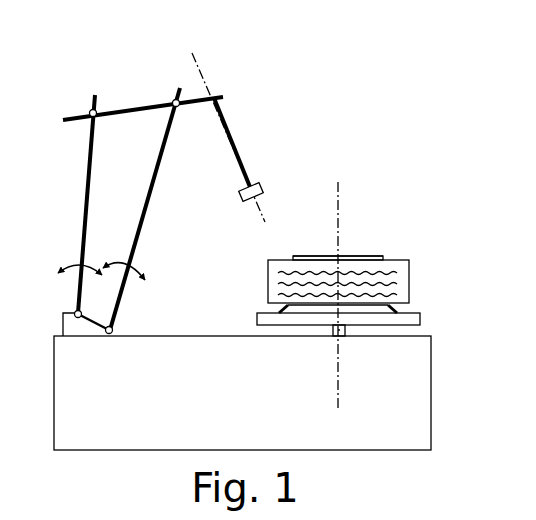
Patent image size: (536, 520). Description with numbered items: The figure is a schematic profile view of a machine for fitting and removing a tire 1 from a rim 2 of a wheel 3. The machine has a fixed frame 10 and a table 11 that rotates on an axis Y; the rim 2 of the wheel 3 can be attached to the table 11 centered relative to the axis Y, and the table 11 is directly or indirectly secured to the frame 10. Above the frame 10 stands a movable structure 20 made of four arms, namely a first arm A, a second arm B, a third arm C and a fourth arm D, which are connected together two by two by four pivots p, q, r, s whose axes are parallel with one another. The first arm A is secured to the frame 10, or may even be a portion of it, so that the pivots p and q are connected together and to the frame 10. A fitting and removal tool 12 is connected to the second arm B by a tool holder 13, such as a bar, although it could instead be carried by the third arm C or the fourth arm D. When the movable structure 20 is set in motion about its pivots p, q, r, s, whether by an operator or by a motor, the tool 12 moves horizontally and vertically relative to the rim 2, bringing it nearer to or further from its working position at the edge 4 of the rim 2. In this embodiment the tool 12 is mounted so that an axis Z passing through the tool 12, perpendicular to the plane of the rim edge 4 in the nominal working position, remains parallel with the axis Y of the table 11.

The movable structure 20 is at (174, 202).
The tool holder 13 is at (229, 130).
The fitting and removal tool 12 is at (263, 192).
The wheel 3 is at (363, 263).
The edge of the rim 4 is at (291, 256).
The rim 2 is at (379, 256).
The tire 1 is at (408, 275).
The table 11 is at (420, 318).
The fixed frame 10 is at (420, 415).
The first arm A is at (92, 338).
The second arm B is at (140, 104).
The third arm C is at (143, 220).
The fourth arm D is at (84, 213).
The pivot p is at (113, 328).
The pivot q is at (75, 312).
The pivot r is at (89, 117).
The pivot s is at (178, 107).
The axis Y is at (335, 282).
The axis Z is at (226, 124).